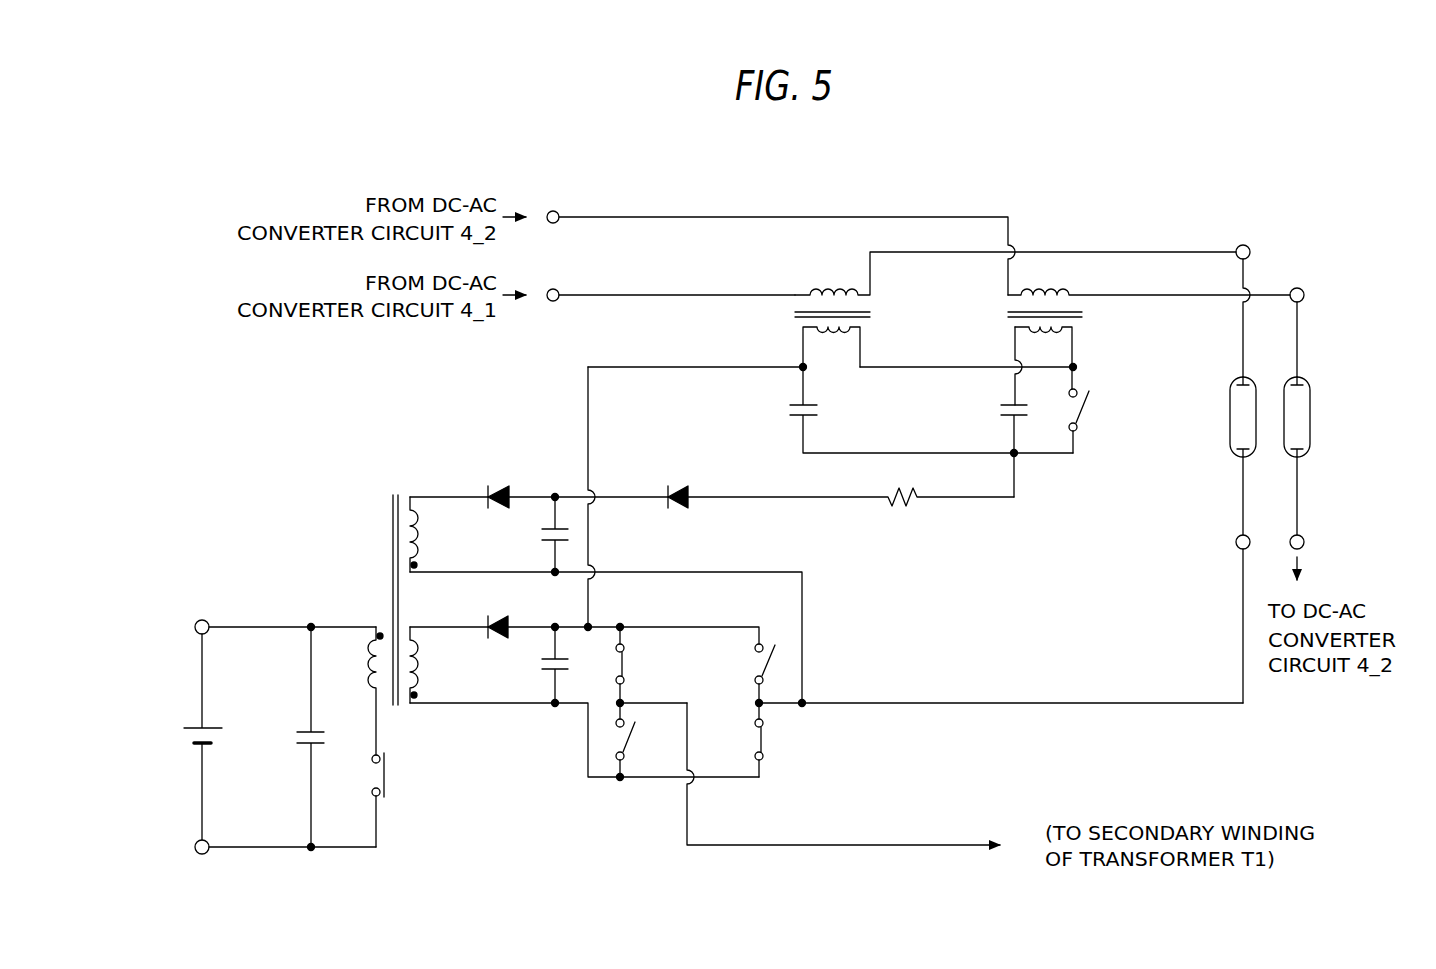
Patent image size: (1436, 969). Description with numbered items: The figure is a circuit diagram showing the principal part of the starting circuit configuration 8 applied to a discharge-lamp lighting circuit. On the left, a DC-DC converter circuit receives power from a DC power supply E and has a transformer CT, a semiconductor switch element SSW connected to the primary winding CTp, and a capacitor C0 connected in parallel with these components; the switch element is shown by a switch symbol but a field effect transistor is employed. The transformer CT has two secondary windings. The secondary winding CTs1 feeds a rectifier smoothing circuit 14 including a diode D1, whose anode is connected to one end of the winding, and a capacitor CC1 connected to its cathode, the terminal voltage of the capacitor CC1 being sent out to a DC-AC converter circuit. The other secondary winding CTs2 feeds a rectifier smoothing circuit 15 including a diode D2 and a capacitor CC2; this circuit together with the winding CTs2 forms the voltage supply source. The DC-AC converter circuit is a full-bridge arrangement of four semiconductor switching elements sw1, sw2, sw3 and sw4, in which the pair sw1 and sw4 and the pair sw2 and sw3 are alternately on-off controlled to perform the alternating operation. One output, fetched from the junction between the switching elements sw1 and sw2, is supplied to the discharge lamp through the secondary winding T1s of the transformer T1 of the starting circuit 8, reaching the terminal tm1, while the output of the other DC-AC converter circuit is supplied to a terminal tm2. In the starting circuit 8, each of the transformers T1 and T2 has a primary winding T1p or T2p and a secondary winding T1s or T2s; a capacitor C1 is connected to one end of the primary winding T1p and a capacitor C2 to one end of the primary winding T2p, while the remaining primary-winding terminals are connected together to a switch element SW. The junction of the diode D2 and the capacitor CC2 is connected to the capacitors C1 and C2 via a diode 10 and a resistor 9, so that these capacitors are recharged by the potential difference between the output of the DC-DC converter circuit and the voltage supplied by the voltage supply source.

The starting circuit configuration 8 is at (1127, 211).
The rectifier smoothing circuit 15 is at (470, 424).
The rectifier smoothing circuit 14 is at (490, 719).
The diode 10 is at (673, 485).
The resistor 9 is at (915, 499).
The terminal tm1 is at (793, 556).
The terminal tm2 is at (781, 242).
The transformer T1 is at (818, 313).
The secondary winding T1s is at (872, 297).
The primary winding T1p is at (861, 330).
The transformer T2 is at (1029, 313).
The secondary winding T2s is at (1084, 297).
The primary winding T2p is at (1074, 330).
The capacitor C1 is at (789, 410).
The capacitor C2 is at (996, 410).
The switch element SW is at (1094, 421).
The transformer CT is at (411, 612).
The primary winding CTp is at (376, 627).
The secondary winding CTs1 is at (432, 609).
The secondary winding CTs2 is at (434, 478).
The diode D1 is at (507, 617).
The diode D2 is at (492, 485).
The capacitor CC1 is at (535, 664).
The capacitor CC2 is at (535, 534).
The capacitor C0 is at (307, 731).
The DC power supply E is at (196, 727).
The semiconductor switch element SSW is at (399, 800).
The semiconductor switching element sw1 is at (651, 672).
The semiconductor switching element sw2 is at (645, 750).
The semiconductor switching element sw3 is at (978, 681).
The semiconductor switching element sw4 is at (738, 748).